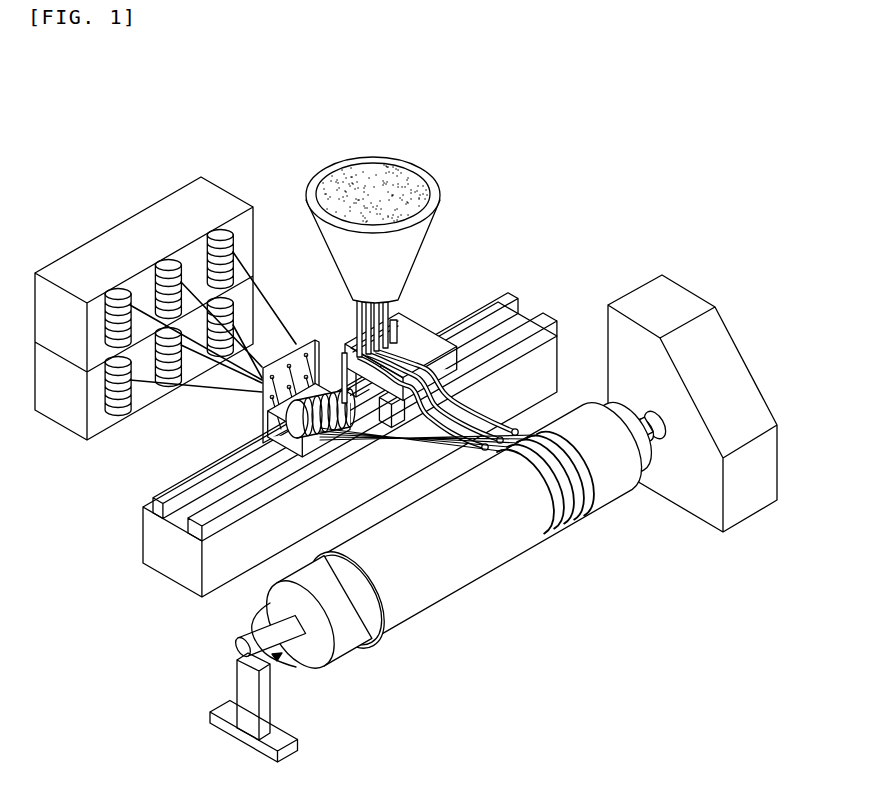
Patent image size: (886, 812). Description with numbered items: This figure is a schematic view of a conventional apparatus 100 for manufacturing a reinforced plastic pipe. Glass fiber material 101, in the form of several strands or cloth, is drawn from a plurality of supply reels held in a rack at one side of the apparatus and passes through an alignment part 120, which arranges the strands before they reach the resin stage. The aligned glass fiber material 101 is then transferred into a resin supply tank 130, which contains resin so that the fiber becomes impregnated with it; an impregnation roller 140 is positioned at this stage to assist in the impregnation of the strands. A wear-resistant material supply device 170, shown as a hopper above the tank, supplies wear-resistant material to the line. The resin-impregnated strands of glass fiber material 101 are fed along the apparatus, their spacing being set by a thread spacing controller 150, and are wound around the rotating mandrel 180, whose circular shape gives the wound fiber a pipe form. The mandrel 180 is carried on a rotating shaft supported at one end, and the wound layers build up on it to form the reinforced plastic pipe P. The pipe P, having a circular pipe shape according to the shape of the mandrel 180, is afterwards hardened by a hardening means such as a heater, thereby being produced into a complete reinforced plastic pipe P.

The pipe winding apparatus 100 is at (93, 140).
The glass fiber material 101 is at (157, 387).
The alignment part 120 is at (313, 363).
The resin supply tank 130 is at (295, 442).
The impregnation roller 140 is at (268, 416).
The thread spacing controller 150 is at (320, 472).
The wear-resistant material supply device 170 is at (405, 161).
The mandrel 180 is at (345, 648).
The reinforced plastic pipe P is at (490, 568).